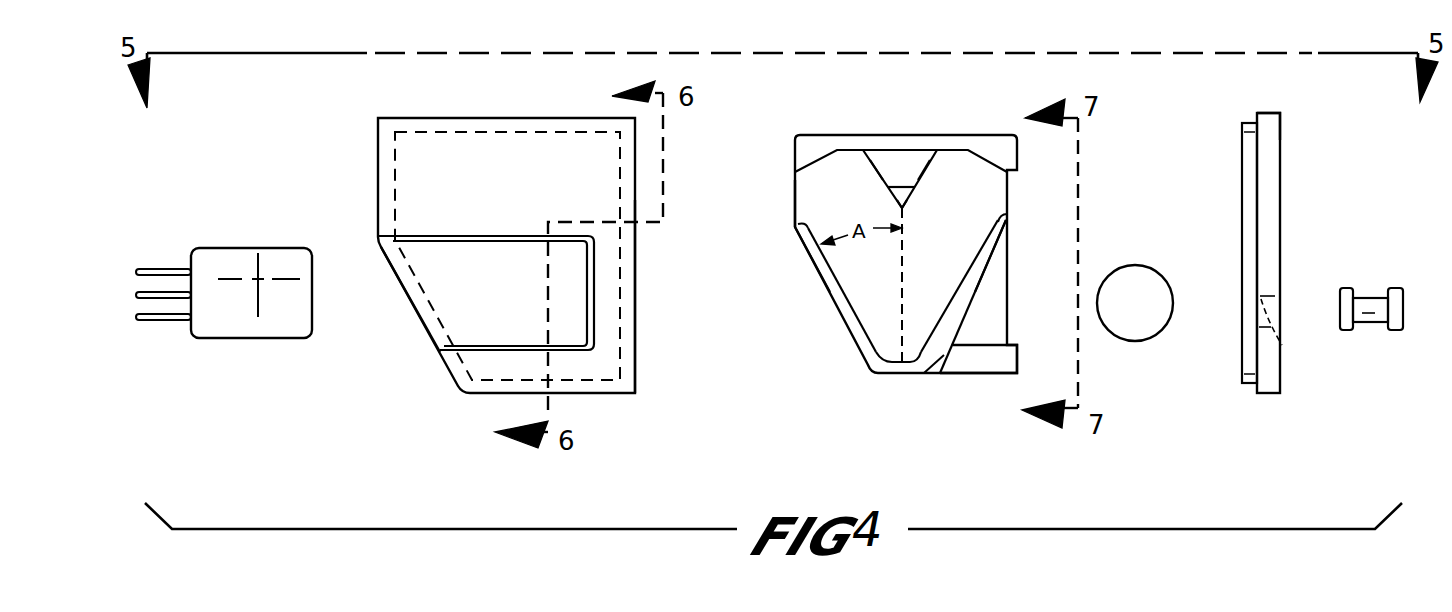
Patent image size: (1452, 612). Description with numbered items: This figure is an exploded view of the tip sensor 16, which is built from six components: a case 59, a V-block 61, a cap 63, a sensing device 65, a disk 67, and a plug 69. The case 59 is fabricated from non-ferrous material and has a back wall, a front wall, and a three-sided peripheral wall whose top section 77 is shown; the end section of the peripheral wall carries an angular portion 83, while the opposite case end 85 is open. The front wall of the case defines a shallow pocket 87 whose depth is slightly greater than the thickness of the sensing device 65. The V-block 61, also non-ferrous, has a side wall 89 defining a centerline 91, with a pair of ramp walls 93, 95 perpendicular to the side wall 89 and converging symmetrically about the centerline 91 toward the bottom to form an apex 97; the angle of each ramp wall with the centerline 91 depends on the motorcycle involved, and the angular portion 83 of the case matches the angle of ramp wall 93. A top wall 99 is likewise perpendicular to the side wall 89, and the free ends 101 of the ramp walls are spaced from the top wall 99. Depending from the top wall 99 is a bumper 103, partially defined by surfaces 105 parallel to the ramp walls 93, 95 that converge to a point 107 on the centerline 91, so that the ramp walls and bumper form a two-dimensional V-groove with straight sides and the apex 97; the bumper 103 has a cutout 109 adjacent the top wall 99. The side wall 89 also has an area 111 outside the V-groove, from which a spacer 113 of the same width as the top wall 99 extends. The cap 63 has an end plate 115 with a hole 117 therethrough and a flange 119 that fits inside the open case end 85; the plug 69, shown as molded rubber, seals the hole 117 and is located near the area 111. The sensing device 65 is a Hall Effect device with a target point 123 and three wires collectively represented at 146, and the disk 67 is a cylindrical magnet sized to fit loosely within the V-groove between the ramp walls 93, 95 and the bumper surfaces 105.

The tip sensor 16 is at (305, 405).
The case 59 is at (438, 374).
The V-block 61 is at (828, 307).
The cap 63 is at (1290, 180).
The sensing device 65 is at (241, 257).
The disk 67 is at (1142, 282).
The plug 69 is at (1375, 290).
The top section 77 is at (420, 143).
The angular portion 83 is at (422, 328).
The case end 85 is at (637, 338).
The pocket 87 is at (502, 300).
The side wall 89 is at (804, 201).
The centerline 91 is at (903, 273).
The ramp wall 93 is at (820, 268).
The ramp wall 95 is at (975, 271).
The apex 97 is at (893, 357).
The top wall 99 is at (808, 145).
The free ends 101 is at (800, 226).
The bumper 103 is at (915, 160).
The surfaces 105 is at (878, 172).
The point 107 is at (908, 210).
The cutout 109 is at (898, 185).
The area 111 is at (940, 358).
The spacer 113 is at (990, 365).
The end plate 115 is at (1268, 123).
The hole 117 is at (1285, 347).
The flange 119 is at (1250, 122).
The target point 123 is at (256, 279).
The wires 146 is at (147, 330).